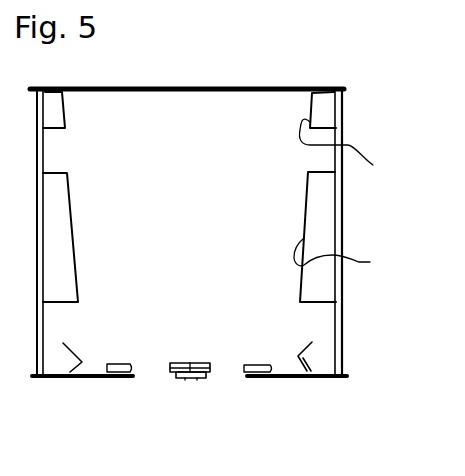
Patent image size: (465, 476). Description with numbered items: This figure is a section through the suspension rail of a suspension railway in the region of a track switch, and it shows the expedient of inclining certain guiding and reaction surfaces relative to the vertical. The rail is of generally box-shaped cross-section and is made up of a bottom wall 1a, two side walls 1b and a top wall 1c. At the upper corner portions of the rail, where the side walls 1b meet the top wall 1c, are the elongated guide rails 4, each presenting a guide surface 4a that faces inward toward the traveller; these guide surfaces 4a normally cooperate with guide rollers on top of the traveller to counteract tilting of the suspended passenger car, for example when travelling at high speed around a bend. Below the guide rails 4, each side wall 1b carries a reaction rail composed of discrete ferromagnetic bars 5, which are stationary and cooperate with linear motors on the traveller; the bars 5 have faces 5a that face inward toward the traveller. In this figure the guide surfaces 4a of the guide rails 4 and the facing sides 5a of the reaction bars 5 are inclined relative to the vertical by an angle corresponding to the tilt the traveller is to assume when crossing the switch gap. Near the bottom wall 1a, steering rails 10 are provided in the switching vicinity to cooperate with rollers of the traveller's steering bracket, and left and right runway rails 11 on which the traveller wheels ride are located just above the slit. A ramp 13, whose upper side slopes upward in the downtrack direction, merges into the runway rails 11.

The bottom wall 1a is at (88, 377).
The side wall 1b is at (338, 320).
The top wall 1c is at (173, 87).
The guide rail 4 is at (325, 112).
The guide surface 4a is at (349, 150).
The ferromagnetic bar 5 is at (322, 225).
The vertical face 5a is at (347, 256).
The steering rail 10 is at (302, 357).
The runway rail 11 is at (123, 367).
The ramp 13 is at (195, 380).